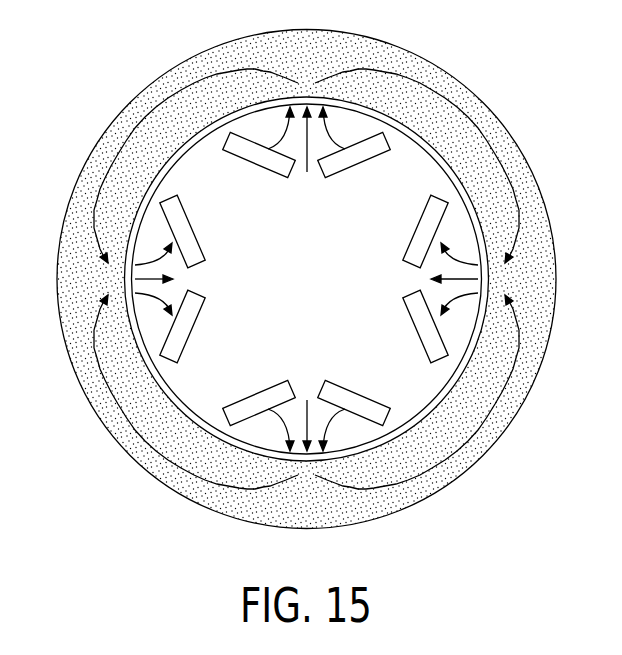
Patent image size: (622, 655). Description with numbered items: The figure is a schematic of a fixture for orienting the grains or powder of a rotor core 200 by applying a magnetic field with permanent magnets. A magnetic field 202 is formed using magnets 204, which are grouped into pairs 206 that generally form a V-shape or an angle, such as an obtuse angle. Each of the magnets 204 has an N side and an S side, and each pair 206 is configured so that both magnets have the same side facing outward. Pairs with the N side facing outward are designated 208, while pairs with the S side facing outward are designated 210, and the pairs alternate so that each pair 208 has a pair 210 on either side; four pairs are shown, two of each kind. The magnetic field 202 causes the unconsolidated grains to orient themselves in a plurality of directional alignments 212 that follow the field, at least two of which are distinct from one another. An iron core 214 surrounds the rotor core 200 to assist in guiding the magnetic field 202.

The rotor core 200 is at (474, 131).
The magnetic field 202 is at (145, 260).
The magnets 204 is at (383, 410).
The pairs of magnets 206 is at (237, 148).
The pair of magnets with N side facing outward 208 is at (247, 419).
The pair of magnets with S side facing outward 210 is at (440, 352).
The directional alignments 212 is at (277, 127).
The iron core 214 is at (72, 193).